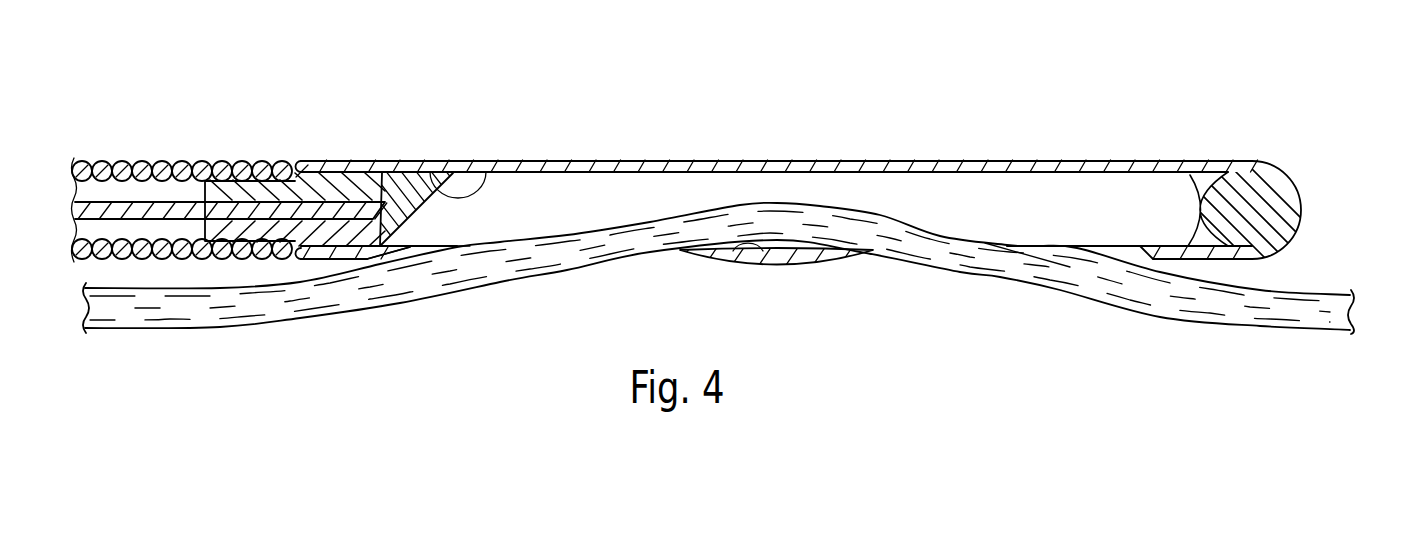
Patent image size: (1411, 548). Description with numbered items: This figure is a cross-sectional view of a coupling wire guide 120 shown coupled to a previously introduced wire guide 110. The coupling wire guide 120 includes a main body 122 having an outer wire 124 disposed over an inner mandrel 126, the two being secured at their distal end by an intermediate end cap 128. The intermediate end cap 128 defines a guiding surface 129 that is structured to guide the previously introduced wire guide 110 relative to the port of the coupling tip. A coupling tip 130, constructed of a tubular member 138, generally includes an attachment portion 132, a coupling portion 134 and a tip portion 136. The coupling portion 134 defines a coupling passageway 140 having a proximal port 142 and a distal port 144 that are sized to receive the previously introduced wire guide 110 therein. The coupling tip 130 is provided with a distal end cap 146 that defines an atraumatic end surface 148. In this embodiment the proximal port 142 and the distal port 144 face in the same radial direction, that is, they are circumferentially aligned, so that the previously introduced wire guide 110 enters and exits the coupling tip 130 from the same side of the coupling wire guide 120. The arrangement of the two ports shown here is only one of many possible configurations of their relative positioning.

The previously introduced wire guide 110 is at (340, 298).
The coupling wire guide 120 is at (290, 132).
The main body 122 is at (103, 158).
The outer wire 124 is at (185, 160).
The inner mandrel 126 is at (275, 210).
The intermediate end cap 128 is at (398, 195).
The guiding surface 129 is at (487, 158).
The coupling tip 130 is at (839, 239).
The attachment portion 132 is at (347, 161).
The coupling portion 134 is at (756, 161).
The tip portion 136 is at (1141, 161).
The tubular member 138 is at (808, 264).
The coupling passageway 140 is at (776, 263).
The proximal port 142 is at (457, 248).
The distal port 144 is at (1077, 249).
The distal end cap 146 is at (1257, 197).
The atraumatic end surface 148 is at (1305, 210).